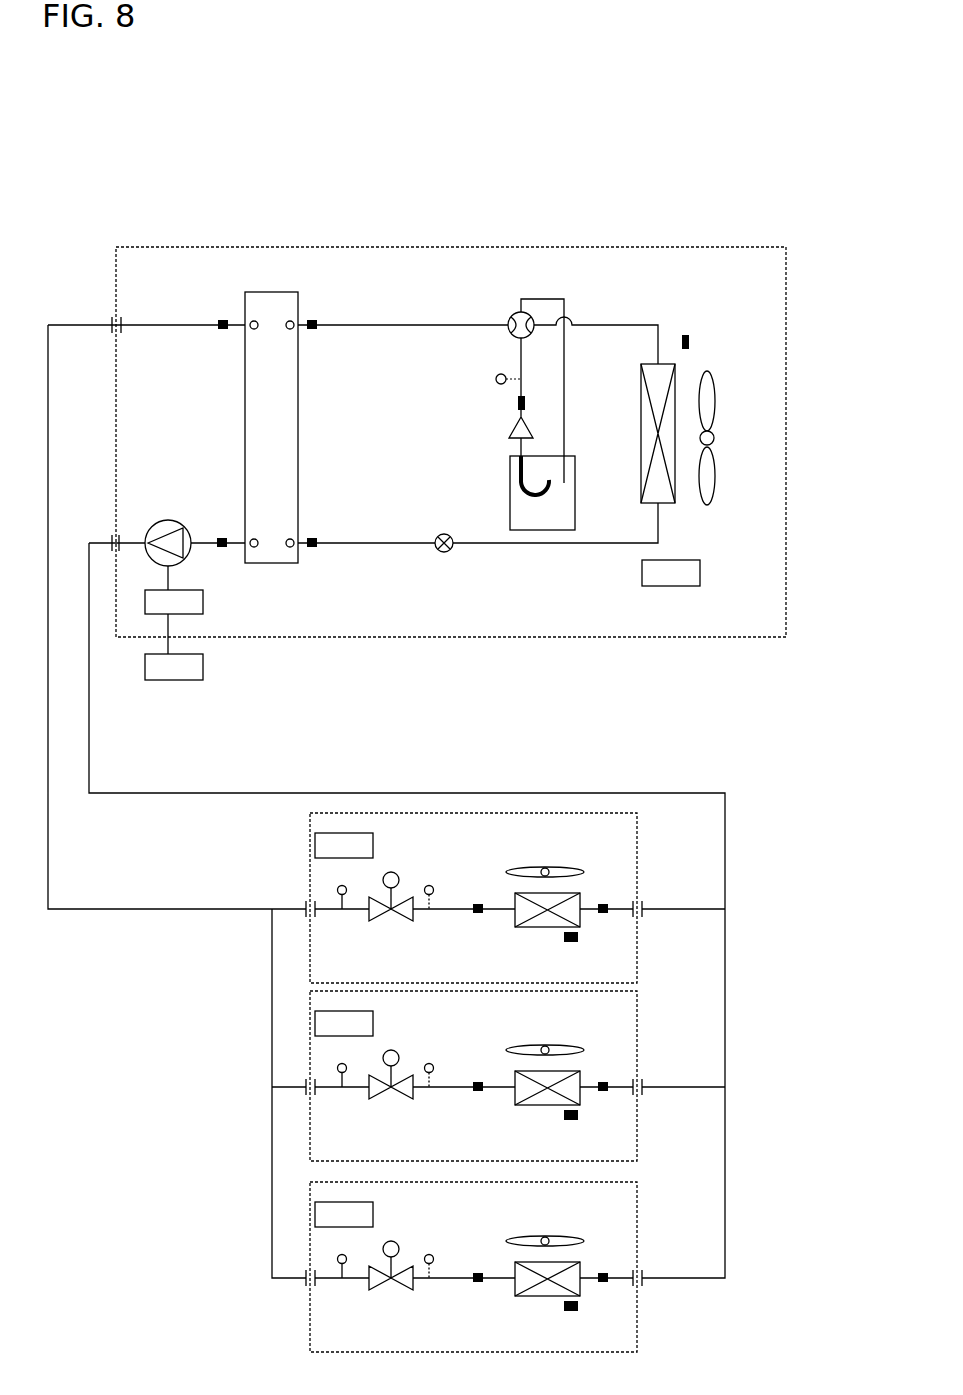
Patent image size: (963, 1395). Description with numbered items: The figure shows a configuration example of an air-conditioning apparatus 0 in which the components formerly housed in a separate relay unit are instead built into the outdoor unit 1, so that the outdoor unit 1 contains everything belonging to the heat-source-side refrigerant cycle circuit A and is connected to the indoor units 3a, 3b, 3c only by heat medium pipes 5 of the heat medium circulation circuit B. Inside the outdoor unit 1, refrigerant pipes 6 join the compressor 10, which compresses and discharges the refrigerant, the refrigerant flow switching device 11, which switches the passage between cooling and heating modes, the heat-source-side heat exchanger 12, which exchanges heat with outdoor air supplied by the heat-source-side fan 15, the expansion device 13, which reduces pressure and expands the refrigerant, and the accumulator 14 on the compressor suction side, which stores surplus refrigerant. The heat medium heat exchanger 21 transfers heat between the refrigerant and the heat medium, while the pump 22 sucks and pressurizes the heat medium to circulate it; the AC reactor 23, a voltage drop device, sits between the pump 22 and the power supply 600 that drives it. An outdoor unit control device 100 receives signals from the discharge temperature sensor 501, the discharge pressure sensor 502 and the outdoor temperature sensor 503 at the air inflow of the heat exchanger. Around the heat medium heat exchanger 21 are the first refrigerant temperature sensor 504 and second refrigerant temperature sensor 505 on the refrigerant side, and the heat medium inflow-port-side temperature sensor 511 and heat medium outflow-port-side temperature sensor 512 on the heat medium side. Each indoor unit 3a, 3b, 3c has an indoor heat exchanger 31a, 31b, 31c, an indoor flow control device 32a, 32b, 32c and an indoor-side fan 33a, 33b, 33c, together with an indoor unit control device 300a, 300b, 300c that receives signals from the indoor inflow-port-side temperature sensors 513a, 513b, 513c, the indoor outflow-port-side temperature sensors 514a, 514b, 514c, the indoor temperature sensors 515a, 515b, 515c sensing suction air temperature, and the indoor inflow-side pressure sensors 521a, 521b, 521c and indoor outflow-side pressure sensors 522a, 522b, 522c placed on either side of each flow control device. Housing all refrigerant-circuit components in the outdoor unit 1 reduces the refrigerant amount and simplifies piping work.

The air-conditioning apparatus 0 is at (797, 340).
The outdoor unit 1 is at (786, 378).
The heat-source-side refrigerant cycle circuit A is at (372, 308).
The heat medium circulation circuit B is at (615, 778).
The heat medium pipe 5 is at (206, 794).
The refrigerant pipe 6 is at (390, 328).
The compressor 10 is at (532, 438).
The refrigerant flow switching device 11 is at (511, 316).
The heat-source-side heat exchanger 12 is at (641, 395).
The expansion device 13 is at (449, 535).
The accumulator 14 is at (577, 476).
The heat-source-side fan 15 is at (716, 415).
The heat medium heat exchanger 21 is at (257, 292).
The pump 22 is at (176, 519).
The AC reactor 23 is at (145, 596).
The outdoor unit control device 100 is at (683, 560).
The power supply 600 is at (205, 672).
The discharge temperature sensor 501 is at (517, 403).
The discharge pressure sensor 502 is at (496, 376).
The outdoor temperature sensor 503 is at (690, 341).
The first refrigerant temperature sensor 504 is at (312, 537).
The second refrigerant temperature sensor 505 is at (313, 319).
The heat medium inflow-port-side temperature sensor 511 is at (224, 319).
The heat medium outflow-port-side temperature sensor 512 is at (222, 537).
The indoor unit 3a is at (638, 840).
The indoor unit 3b is at (490, 1076).
The indoor unit 3c is at (489, 1267).
The indoor unit control device 300a is at (373, 835).
The indoor unit control device 300b is at (372, 1016).
The indoor unit control device 300c is at (372, 1207).
The indoor heat exchanger 31a is at (518, 928).
The indoor heat exchanger 31b is at (541, 1109).
The indoor heat exchanger 31c is at (541, 1300).
The indoor flow control device 32a is at (410, 918).
The indoor flow control device 32b is at (392, 1088).
The indoor flow control device 32c is at (392, 1279).
The indoor-side fan 33a is at (534, 870).
The indoor-side fan 33b is at (545, 1037).
The indoor-side fan 33c is at (545, 1228).
The indoor inflow-port-side temperature sensor 513a is at (605, 903).
The indoor inflow-port-side temperature sensor 513b is at (611, 1069).
The indoor inflow-port-side temperature sensor 513c is at (611, 1260).
The indoor outflow-port-side temperature sensor 514a is at (479, 903).
The indoor outflow-port-side temperature sensor 514b is at (483, 1069).
The indoor outflow-port-side temperature sensor 514c is at (483, 1260).
The indoor temperature sensor 515a is at (571, 943).
The indoor temperature sensor 515b is at (581, 1135).
The indoor temperature sensor 515c is at (581, 1326).
The indoor inflow-side pressure sensor 521a is at (430, 885).
The indoor inflow-side pressure sensor 521b is at (439, 1062).
The indoor inflow-side pressure sensor 521c is at (439, 1253).
The indoor outflow-side pressure sensor 522a is at (345, 874).
The indoor outflow-side pressure sensor 522b is at (357, 1064).
The indoor outflow-side pressure sensor 522c is at (357, 1255).